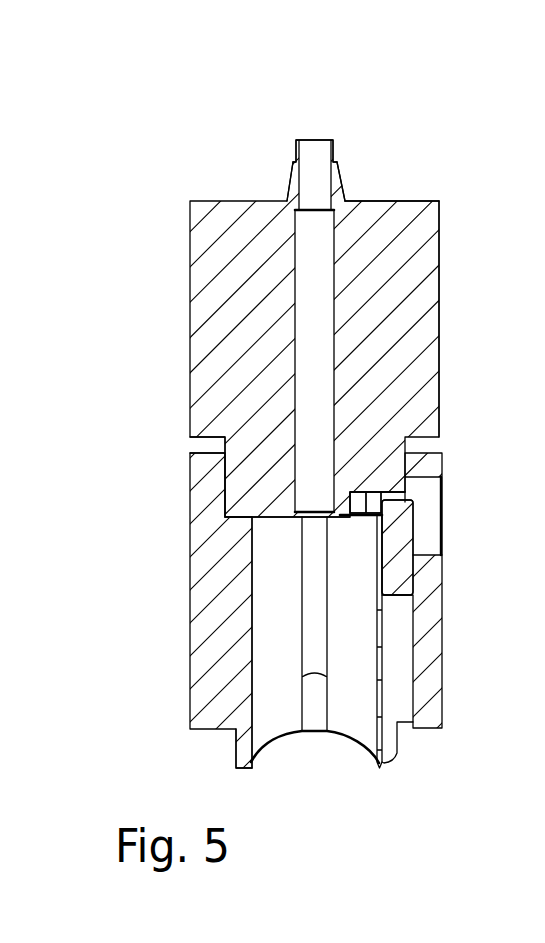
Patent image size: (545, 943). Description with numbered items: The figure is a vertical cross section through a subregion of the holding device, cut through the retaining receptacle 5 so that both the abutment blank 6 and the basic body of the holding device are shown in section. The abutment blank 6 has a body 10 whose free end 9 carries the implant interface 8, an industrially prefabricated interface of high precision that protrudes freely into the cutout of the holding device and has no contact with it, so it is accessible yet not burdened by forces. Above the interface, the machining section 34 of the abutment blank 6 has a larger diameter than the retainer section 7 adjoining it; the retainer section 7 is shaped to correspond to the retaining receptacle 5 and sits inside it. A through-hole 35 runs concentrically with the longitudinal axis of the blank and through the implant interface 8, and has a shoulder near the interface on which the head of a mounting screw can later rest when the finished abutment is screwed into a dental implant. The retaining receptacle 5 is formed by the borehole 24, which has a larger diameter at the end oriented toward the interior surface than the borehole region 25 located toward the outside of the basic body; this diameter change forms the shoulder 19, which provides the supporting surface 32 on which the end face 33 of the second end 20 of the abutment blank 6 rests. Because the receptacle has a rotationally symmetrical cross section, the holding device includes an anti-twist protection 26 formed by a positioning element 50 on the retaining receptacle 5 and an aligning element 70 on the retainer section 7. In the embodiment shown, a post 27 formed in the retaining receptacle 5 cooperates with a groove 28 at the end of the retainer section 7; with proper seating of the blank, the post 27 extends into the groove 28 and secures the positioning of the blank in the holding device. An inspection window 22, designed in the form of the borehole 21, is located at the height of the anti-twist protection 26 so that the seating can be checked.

The retaining receptacle 5 is at (216, 478).
The abutment blank 6 is at (440, 262).
The retainer section 7 is at (232, 455).
The implant interface 8 is at (336, 157).
The free end 9 is at (372, 200).
The body 10 is at (404, 214).
The shoulder 19 is at (247, 517).
The second end 20 is at (265, 517).
The borehole 21 is at (443, 537).
The inspection window 22 is at (427, 542).
The borehole 24 is at (223, 505).
The borehole region 25 is at (286, 723).
The anti-twist protection 26 is at (452, 500).
The post 27 is at (403, 523).
The groove 28 is at (370, 502).
The supporting surface 32 is at (246, 528).
The end face 33 is at (348, 517).
The machining section 34 is at (202, 238).
The through-hole 35 is at (314, 228).
The positioning element 50 is at (403, 523).
The aligning element 70 is at (370, 502).